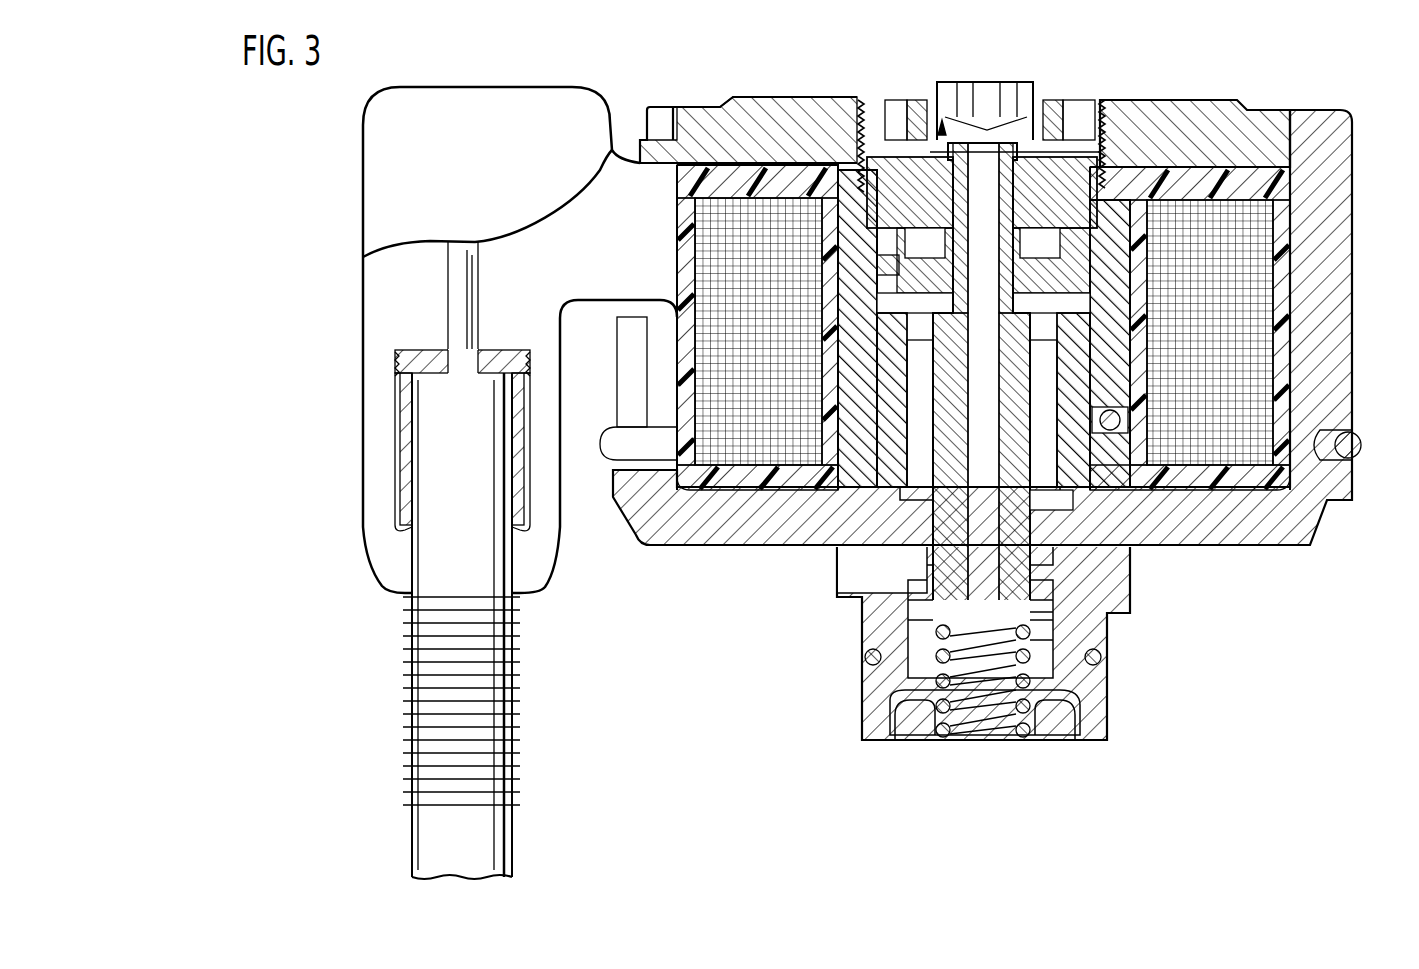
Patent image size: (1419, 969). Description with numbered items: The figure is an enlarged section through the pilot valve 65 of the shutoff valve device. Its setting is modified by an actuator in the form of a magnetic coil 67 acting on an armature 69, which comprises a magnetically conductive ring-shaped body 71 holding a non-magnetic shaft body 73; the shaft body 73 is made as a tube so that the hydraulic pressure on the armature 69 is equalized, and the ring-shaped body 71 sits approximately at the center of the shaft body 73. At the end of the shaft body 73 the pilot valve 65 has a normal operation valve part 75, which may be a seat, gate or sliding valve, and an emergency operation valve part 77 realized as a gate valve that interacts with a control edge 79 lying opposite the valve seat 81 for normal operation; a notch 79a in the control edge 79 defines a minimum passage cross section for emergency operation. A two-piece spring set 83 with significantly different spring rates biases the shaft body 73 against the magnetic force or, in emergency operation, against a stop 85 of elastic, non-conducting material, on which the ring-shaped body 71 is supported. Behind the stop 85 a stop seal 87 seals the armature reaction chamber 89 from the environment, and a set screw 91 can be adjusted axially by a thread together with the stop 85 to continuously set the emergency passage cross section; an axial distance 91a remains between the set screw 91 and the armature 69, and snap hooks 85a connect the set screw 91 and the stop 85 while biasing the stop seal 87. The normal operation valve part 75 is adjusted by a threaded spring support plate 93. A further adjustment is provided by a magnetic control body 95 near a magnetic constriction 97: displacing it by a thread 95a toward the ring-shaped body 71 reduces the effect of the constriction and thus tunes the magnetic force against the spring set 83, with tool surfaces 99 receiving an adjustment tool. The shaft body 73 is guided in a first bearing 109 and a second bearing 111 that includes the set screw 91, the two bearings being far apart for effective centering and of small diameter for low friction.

The pilot valve 65 is at (1176, 728).
The magnetic coil 67 is at (1147, 318).
The armature 69 is at (1035, 300).
The ring-shaped body 71 is at (1080, 407).
The shaft body 73 is at (1007, 387).
The normal operation valve part 75 is at (1035, 573).
The emergency operation valve part 77 is at (1055, 635).
The control edge 79 is at (870, 687).
The notch 79a is at (1040, 608).
The valve seat 81 is at (910, 562).
The spring set 83 is at (987, 710).
The stop 85 is at (1165, 175).
The snap hooks 85a is at (1092, 267).
The stop seal 87 is at (880, 268).
The armature reaction chamber 89 is at (1020, 327).
The set screw 91 is at (933, 210).
The axial distance 91a is at (942, 125).
The spring support plate 93 is at (1020, 748).
The magnetic control body 95 is at (876, 145).
The thread 95a is at (862, 130).
The magnetic constriction 97 is at (852, 160).
The tool surfaces 99 is at (1067, 225).
The first bearing 109 is at (1036, 521).
The second bearing 111 is at (1021, 195).